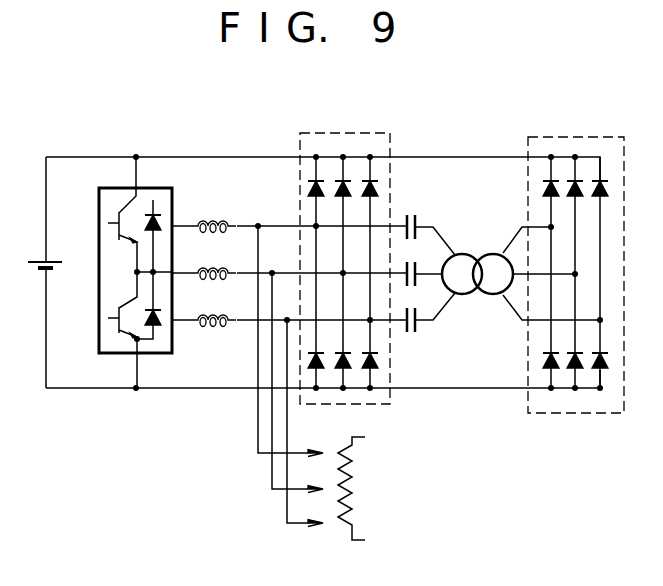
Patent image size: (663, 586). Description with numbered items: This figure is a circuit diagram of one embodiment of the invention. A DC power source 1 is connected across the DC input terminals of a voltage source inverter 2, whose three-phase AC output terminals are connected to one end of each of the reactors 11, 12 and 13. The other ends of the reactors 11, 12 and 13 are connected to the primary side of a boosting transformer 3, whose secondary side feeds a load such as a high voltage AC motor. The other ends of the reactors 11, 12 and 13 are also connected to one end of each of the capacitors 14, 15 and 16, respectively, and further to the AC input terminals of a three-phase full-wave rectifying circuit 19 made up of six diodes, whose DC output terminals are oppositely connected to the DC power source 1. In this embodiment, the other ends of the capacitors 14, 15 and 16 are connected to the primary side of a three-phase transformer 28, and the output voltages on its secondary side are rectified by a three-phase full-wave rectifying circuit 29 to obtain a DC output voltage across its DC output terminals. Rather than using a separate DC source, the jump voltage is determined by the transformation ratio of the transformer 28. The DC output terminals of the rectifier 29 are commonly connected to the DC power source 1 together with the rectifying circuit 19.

The DC power source 1 is at (62, 236).
The voltage source inverter 2 is at (160, 188).
The boosting transformer 3 is at (362, 478).
The reactor 11 is at (214, 217).
The reactor 12 is at (225, 255).
The reactor 13 is at (218, 309).
The capacitor 14 is at (412, 206).
The capacitor 15 is at (412, 260).
The capacitor 16 is at (412, 337).
The three-phase full-wave rectifying circuit 19 is at (357, 133).
The three-phase transformer 28 is at (478, 252).
The three-phase full-wave rectifying circuit 29 is at (572, 137).